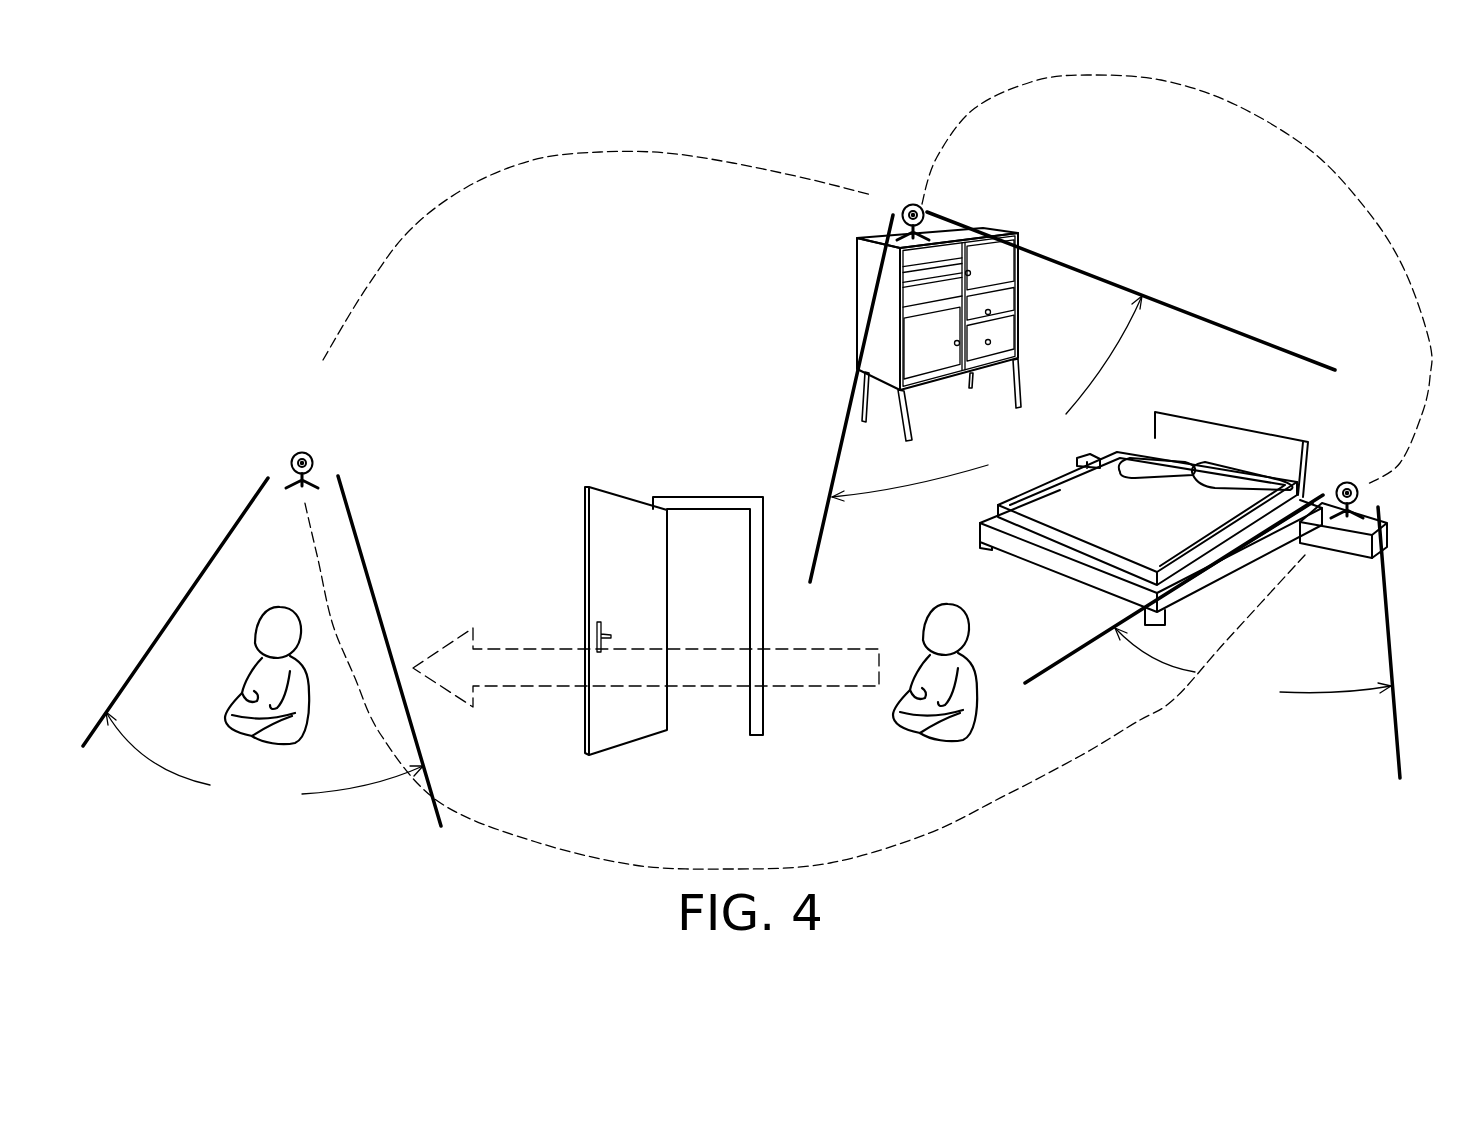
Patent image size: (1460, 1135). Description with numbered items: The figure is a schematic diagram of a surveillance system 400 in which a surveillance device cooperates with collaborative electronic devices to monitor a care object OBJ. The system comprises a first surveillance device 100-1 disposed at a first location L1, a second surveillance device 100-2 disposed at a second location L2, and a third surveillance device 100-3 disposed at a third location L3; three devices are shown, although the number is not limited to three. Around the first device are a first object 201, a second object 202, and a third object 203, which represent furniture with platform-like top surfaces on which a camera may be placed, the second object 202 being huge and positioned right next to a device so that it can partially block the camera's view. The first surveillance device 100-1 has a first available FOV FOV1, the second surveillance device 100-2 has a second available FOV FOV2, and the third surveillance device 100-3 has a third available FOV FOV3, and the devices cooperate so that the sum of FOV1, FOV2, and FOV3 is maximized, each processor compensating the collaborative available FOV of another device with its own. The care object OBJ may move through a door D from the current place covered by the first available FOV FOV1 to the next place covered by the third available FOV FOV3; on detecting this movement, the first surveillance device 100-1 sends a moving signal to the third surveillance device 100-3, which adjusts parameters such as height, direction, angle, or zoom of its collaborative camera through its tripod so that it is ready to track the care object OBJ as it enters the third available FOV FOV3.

The surveillance system 400 is at (1445, 872).
The first surveillance device 100-1 is at (907, 205).
The second surveillance device 100-2 is at (1342, 483).
The third surveillance device 100-3 is at (291, 457).
The first location L1 is at (948, 235).
The second location L2 is at (1388, 512).
The third location L3 is at (289, 485).
The first object 201 is at (999, 280).
The second object 202 is at (1241, 437).
The third object 203 is at (1350, 543).
The door D is at (698, 503).
The care object OBJ is at (937, 603).
The first available FOV FOV1 is at (1072, 397).
The second available FOV FOV2 is at (1212, 636).
The third available FOV FOV3 is at (262, 651).